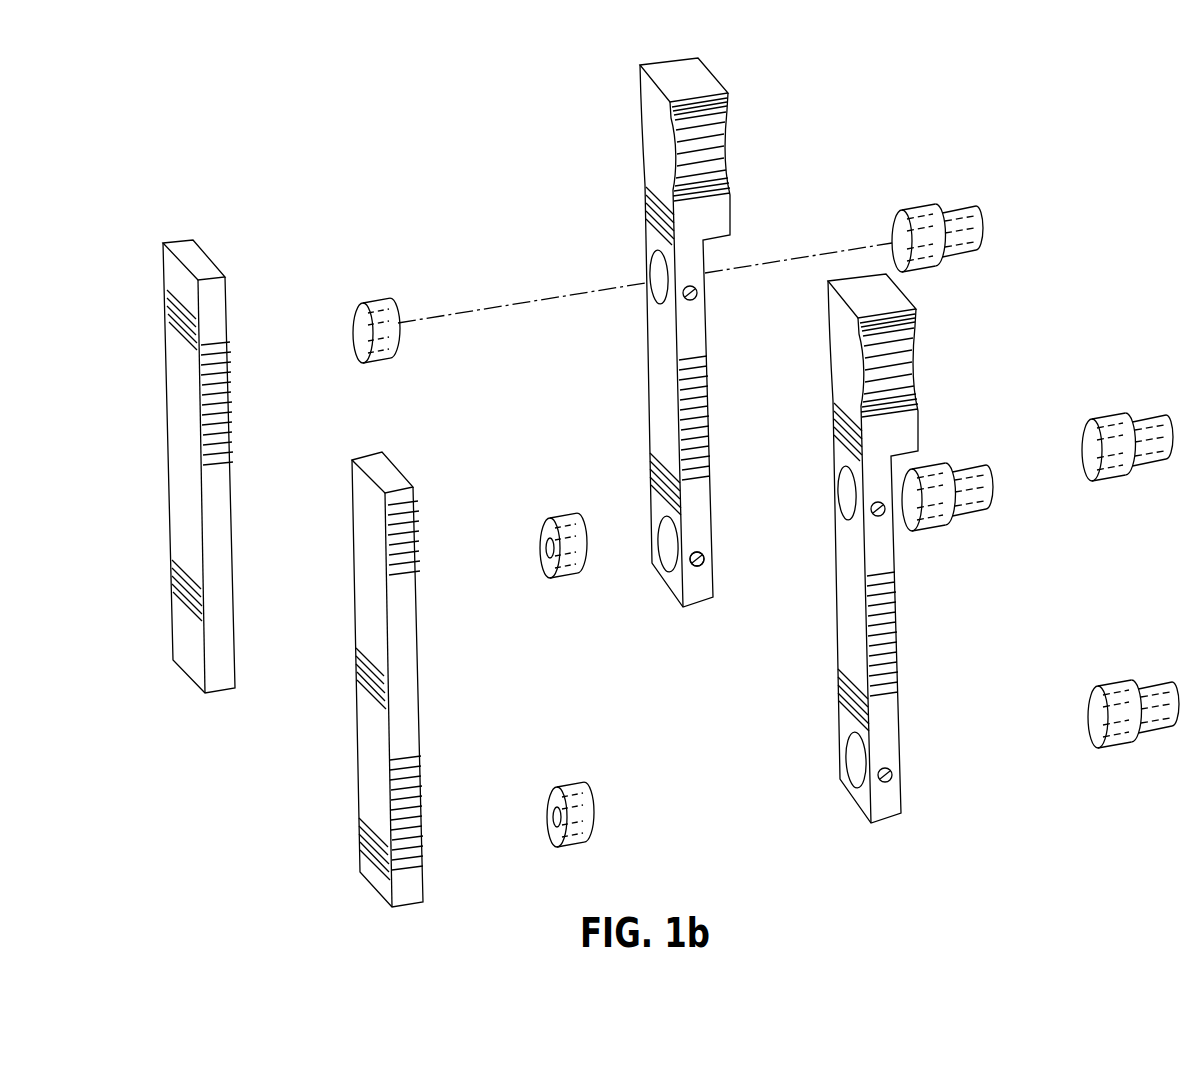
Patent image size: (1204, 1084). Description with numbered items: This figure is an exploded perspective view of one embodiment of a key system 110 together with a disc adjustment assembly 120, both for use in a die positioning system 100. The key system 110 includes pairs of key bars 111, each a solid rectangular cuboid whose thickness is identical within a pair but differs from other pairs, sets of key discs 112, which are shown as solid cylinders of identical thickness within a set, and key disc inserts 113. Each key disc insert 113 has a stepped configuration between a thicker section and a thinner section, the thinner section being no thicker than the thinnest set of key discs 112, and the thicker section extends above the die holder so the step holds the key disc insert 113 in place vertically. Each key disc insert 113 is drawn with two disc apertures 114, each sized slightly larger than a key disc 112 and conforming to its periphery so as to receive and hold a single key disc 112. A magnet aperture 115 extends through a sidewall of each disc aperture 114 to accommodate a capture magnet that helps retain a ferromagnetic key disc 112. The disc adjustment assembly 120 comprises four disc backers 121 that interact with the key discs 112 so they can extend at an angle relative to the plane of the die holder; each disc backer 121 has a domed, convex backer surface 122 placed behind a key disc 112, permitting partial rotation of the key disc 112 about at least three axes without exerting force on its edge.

The die positioning system 100 is at (1027, 123).
The key system 110 is at (352, 128).
The key bar 111 is at (402, 472).
The key disc 112 is at (572, 785).
The key disc insert 113 is at (698, 58).
The disc aperture 114 is at (848, 748).
The magnet aperture 115 is at (705, 560).
The disc adjustment assembly 120 is at (1047, 333).
The disc backer 121 is at (1150, 690).
The backer surface 122 is at (1088, 460).